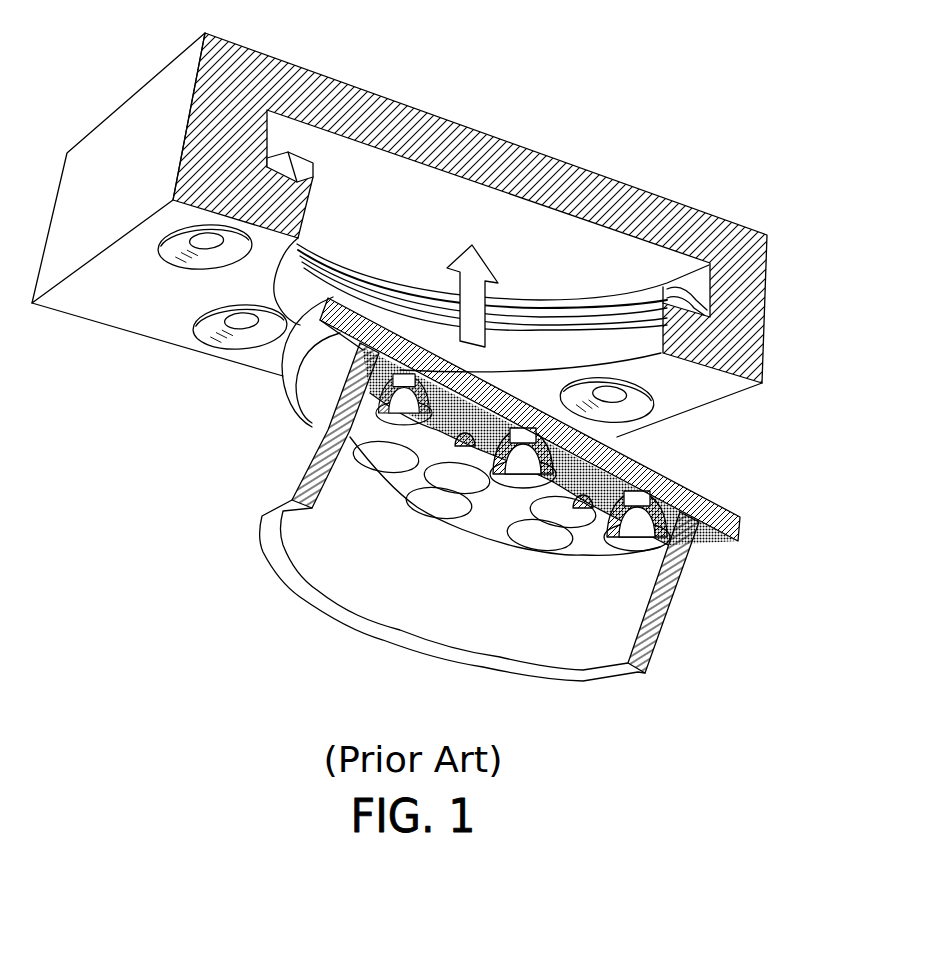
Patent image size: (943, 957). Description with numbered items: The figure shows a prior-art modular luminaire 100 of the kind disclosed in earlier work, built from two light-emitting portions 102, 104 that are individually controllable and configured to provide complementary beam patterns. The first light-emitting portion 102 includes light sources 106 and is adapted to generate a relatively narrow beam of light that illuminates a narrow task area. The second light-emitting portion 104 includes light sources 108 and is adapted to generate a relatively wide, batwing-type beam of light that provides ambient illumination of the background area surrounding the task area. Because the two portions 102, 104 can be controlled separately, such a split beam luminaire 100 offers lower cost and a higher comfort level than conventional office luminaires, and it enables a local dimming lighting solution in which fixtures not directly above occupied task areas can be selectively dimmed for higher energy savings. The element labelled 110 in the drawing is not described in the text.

The modular luminaire 100 is at (421, 383).
The light-emitting portion 102 is at (695, 588).
The light-emitting portion 104 is at (640, 169).
The light sources 106 is at (602, 440).
The light sources 108 is at (193, 258).
The sleeve 110 is at (297, 373).